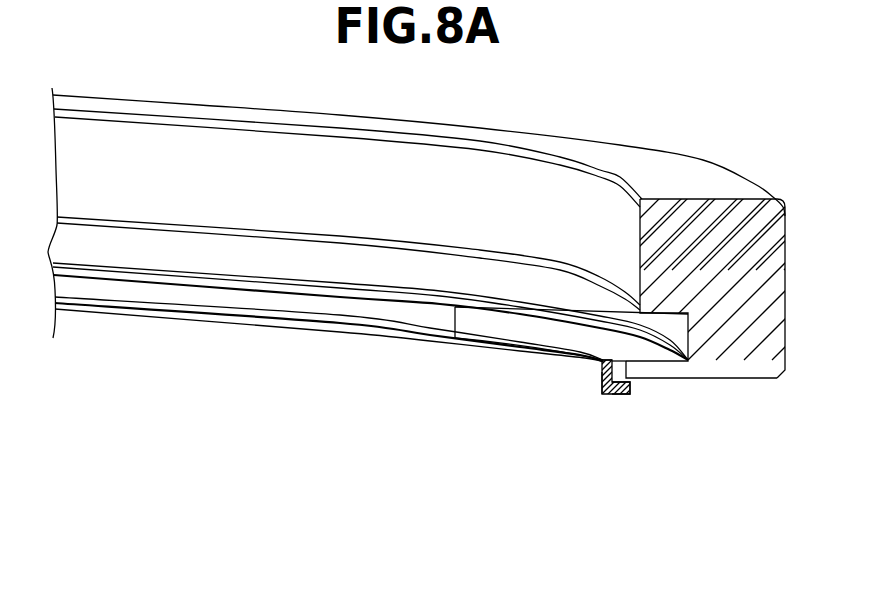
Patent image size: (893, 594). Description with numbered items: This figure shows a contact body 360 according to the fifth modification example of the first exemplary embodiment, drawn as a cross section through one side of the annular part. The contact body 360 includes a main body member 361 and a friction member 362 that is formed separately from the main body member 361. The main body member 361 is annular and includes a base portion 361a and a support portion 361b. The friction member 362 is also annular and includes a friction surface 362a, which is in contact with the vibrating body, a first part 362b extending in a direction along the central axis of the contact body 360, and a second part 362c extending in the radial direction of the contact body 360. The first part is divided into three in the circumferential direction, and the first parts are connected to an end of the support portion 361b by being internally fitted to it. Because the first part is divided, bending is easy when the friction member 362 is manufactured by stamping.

The contact body 360 is at (663, 278).
The main body member 361 is at (706, 255).
The base portion 361a is at (760, 348).
The support portion 361b is at (701, 412).
The friction member 362 is at (554, 430).
The friction surface 362a is at (613, 397).
The first part 362b is at (603, 362).
The second part 362c is at (602, 384).